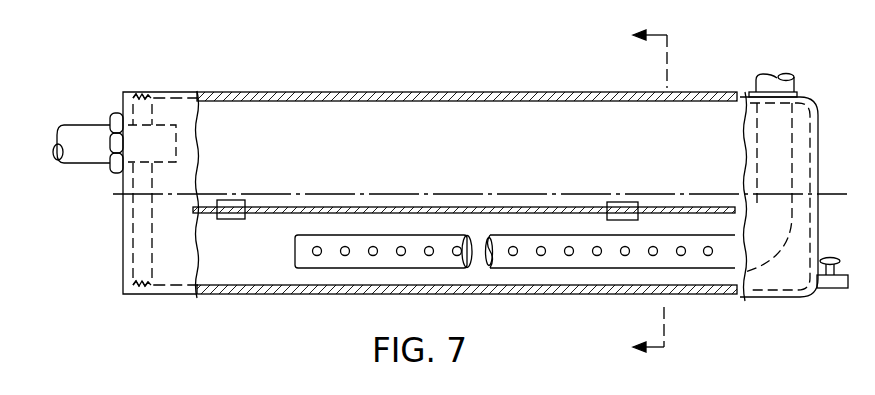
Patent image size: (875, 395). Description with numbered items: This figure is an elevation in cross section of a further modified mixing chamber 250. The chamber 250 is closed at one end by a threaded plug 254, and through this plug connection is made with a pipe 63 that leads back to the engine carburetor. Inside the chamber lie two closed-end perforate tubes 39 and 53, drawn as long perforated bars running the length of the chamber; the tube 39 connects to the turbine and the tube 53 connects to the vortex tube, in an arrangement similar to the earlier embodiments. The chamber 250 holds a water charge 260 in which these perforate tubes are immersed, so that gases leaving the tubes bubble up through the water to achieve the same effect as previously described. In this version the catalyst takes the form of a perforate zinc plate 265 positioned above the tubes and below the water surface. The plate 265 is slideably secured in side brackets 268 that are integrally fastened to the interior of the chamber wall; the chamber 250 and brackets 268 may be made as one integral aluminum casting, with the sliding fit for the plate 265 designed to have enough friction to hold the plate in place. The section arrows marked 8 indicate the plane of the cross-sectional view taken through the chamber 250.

The mixing chamber 250 is at (443, 96).
The threaded plug 254 is at (138, 108).
The pipe 63 is at (83, 133).
The perforate zinc plate 265 is at (560, 208).
The water charge 260 is at (247, 250).
The side brackets 268 is at (634, 205).
The perforate tube 39 is at (340, 268).
The perforate tube 53 is at (698, 265).
The section line 8- 8 is at (650, 191).